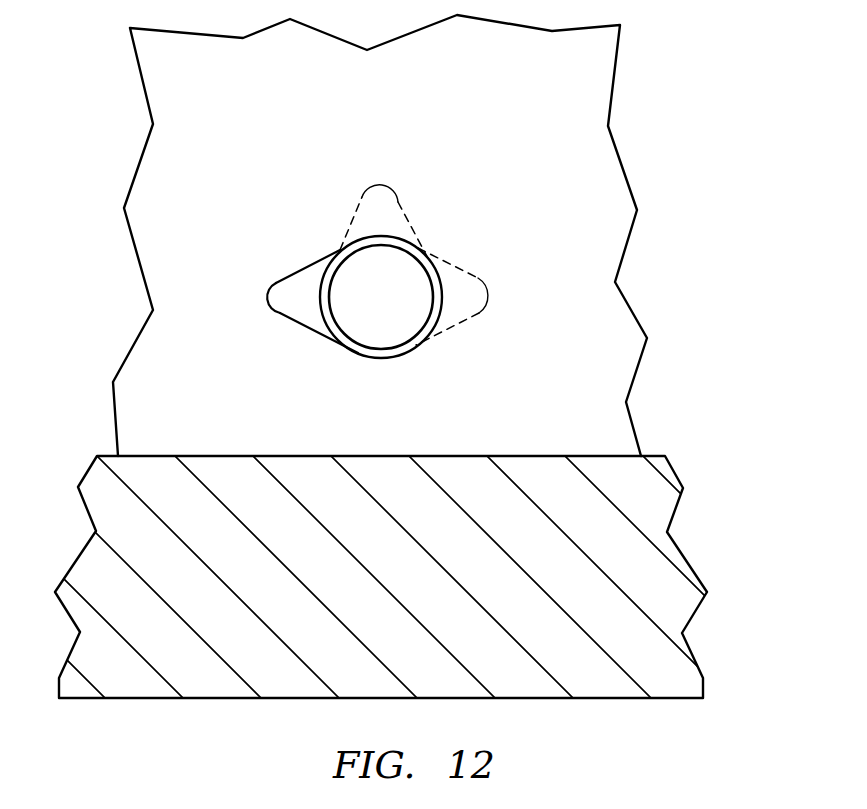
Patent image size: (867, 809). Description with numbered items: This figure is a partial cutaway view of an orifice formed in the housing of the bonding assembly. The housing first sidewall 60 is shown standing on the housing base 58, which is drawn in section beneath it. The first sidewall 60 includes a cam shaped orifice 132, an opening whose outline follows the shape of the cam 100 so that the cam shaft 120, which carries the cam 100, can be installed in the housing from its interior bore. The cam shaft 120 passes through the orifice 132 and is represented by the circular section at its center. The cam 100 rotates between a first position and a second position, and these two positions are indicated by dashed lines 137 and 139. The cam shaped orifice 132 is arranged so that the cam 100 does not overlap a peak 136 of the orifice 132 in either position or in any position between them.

The housing base 58 is at (680, 538).
The housing first sidewall 60 is at (620, 153).
The cam 100 is at (385, 263).
The cam shaft 120 is at (411, 343).
The cam shaped orifice 132 is at (305, 313).
The peak 136 is at (272, 288).
The dashed lines 137 is at (479, 316).
The dashed lines 139 is at (401, 203).